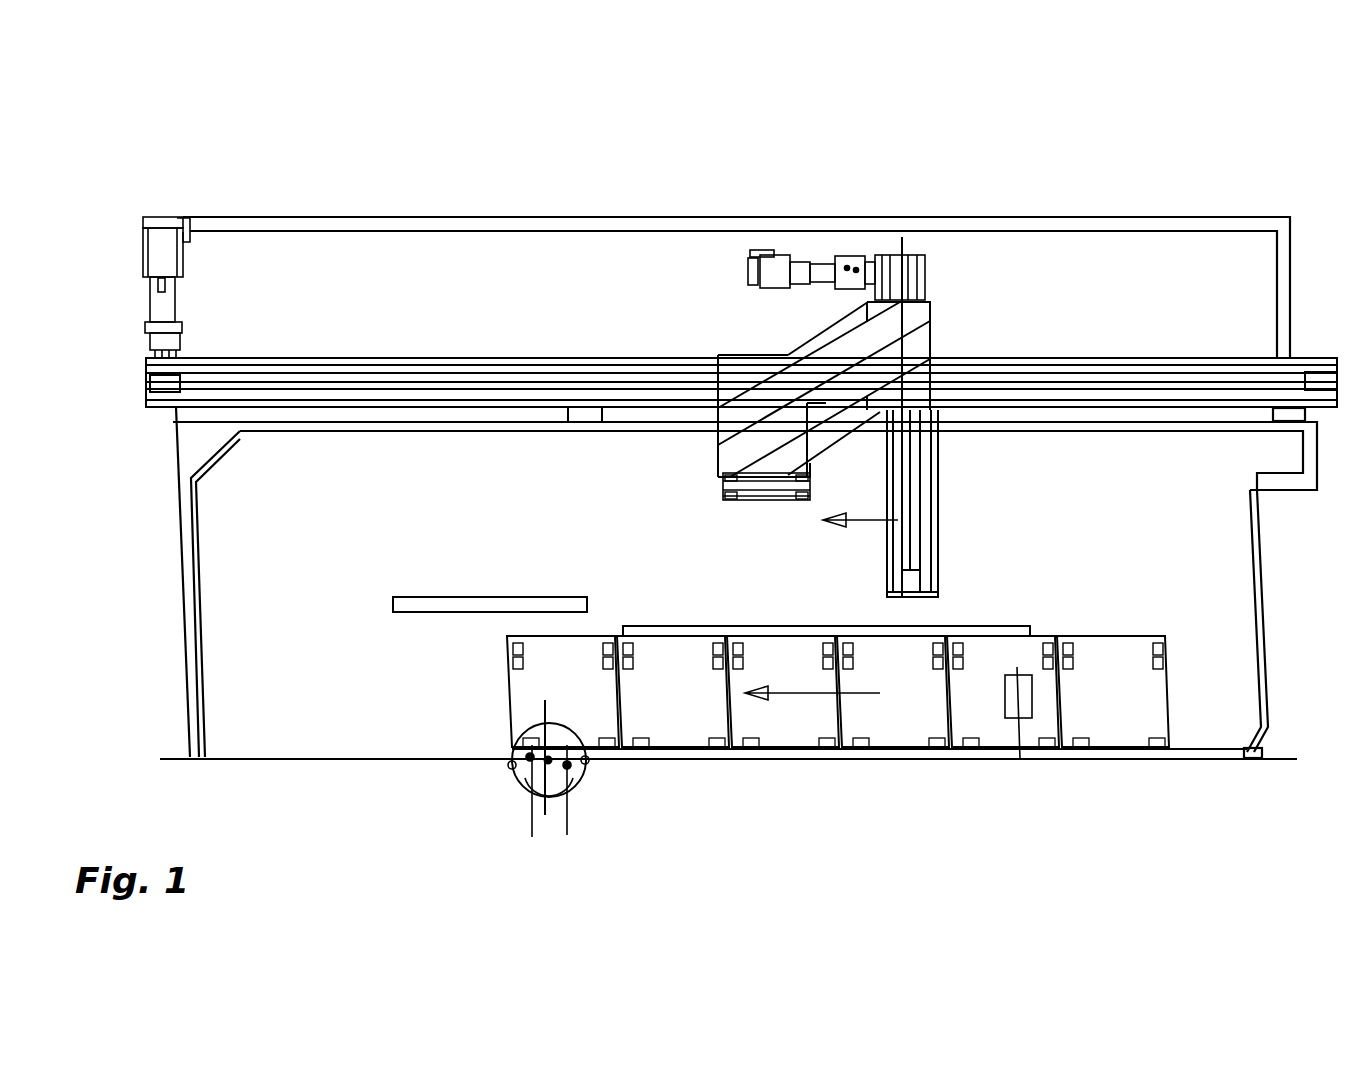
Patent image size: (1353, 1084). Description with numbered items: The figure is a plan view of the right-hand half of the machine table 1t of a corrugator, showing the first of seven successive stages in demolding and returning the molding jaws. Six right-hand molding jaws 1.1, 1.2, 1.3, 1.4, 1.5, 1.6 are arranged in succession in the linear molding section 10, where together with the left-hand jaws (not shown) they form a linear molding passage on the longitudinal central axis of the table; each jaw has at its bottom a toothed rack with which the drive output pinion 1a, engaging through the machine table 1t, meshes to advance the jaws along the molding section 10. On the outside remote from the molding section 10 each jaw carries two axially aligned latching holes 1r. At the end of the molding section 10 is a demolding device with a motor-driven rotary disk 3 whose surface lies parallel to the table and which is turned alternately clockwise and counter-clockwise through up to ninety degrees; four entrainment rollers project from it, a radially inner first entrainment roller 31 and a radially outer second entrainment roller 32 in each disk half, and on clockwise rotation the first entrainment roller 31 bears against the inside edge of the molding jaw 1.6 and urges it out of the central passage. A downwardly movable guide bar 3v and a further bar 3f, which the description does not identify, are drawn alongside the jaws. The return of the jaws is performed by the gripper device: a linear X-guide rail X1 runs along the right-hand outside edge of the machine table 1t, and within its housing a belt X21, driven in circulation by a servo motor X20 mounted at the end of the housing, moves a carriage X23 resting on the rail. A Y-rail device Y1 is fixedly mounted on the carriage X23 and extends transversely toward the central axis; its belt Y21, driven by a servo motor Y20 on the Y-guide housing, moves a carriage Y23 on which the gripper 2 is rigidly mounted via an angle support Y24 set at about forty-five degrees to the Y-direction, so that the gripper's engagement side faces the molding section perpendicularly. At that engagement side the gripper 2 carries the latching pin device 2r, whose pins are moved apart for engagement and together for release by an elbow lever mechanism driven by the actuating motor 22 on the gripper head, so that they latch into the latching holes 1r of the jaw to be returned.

The servo motor X20 is at (143, 300).
The X-guide rail X1 is at (527, 358).
The servo motor Y20 is at (807, 260).
The driven belt X21 is at (447, 385).
The carriage X23 is at (732, 365).
The angle support Y24 is at (825, 355).
The carriage Y23 is at (923, 337).
The gripper 2 is at (718, 460).
The actuating motor 22 is at (732, 463).
The latching pin device 2r is at (723, 492).
The Y-rail device Y1 is at (942, 482).
The driven belt Y21 is at (913, 545).
The machine table 1t is at (1225, 556).
The downwardly movable guide bar 3v is at (481, 600).
The conveyor guide rail 3f is at (745, 630).
The latching holes 1r is at (1043, 650).
The right-hand molding jaw 1.6 is at (563, 691).
The right-hand molding jaw 1.5 is at (673, 691).
The right-hand molding jaw 1.4 is at (783, 691).
The right-hand molding jaw 1.3 is at (893, 691).
The right-hand molding jaw 1.2 is at (1003, 691).
The right-hand molding jaw 1.1 is at (1113, 691).
The molding section 10 is at (832, 818).
The drive output pinion 1a is at (1012, 707).
The second entrainment roller 32 is at (512, 765).
The first entrainment roller 31 is at (551, 810).
The rotary disk 3 is at (577, 803).